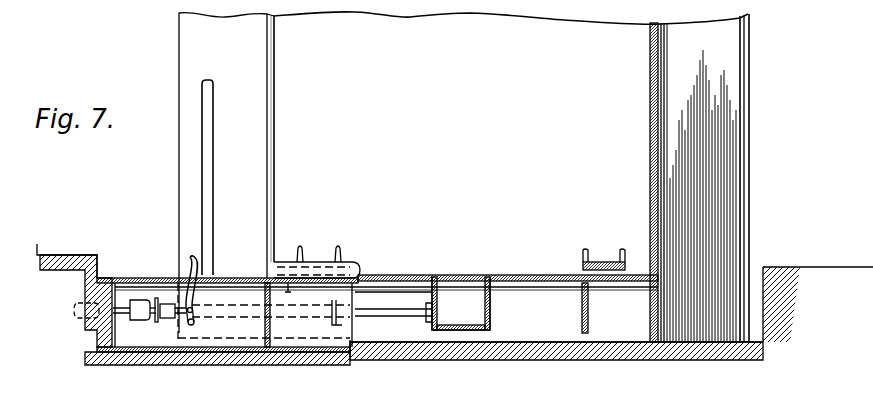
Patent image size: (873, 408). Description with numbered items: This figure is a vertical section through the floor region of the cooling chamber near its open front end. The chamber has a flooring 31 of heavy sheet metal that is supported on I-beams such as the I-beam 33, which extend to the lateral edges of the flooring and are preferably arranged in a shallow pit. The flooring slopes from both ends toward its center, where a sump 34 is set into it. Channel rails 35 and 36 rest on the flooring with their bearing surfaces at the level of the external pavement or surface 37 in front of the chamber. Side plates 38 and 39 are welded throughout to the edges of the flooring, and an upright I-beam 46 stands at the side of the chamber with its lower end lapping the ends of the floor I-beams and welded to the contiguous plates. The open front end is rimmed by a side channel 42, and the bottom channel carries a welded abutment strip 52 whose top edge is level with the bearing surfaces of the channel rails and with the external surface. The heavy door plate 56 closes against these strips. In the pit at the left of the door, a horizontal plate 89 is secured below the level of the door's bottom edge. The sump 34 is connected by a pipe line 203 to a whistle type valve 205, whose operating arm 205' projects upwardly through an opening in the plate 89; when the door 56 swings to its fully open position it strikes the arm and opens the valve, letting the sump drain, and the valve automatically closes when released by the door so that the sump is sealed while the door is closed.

The side channel 42 is at (193, 51).
The door plate 56 is at (211, 196).
The side plate 38 is at (274, 138).
The side plate 39 is at (650, 86).
The upright I-beam 46 is at (700, 68).
The external pavement or surface 37 is at (449, 294).
The operating arm 205' is at (161, 277).
The horizontal plate 89 is at (150, 278).
The whistle type valve 205 is at (130, 346).
The channel rail 35 is at (318, 256).
The abutment strip 52 is at (344, 270).
The pipe line 203 is at (388, 309).
The flooring 31 is at (512, 275).
The channel rail 36 is at (598, 262).
The sump 34 is at (492, 306).
The I-beam 33 is at (550, 315).